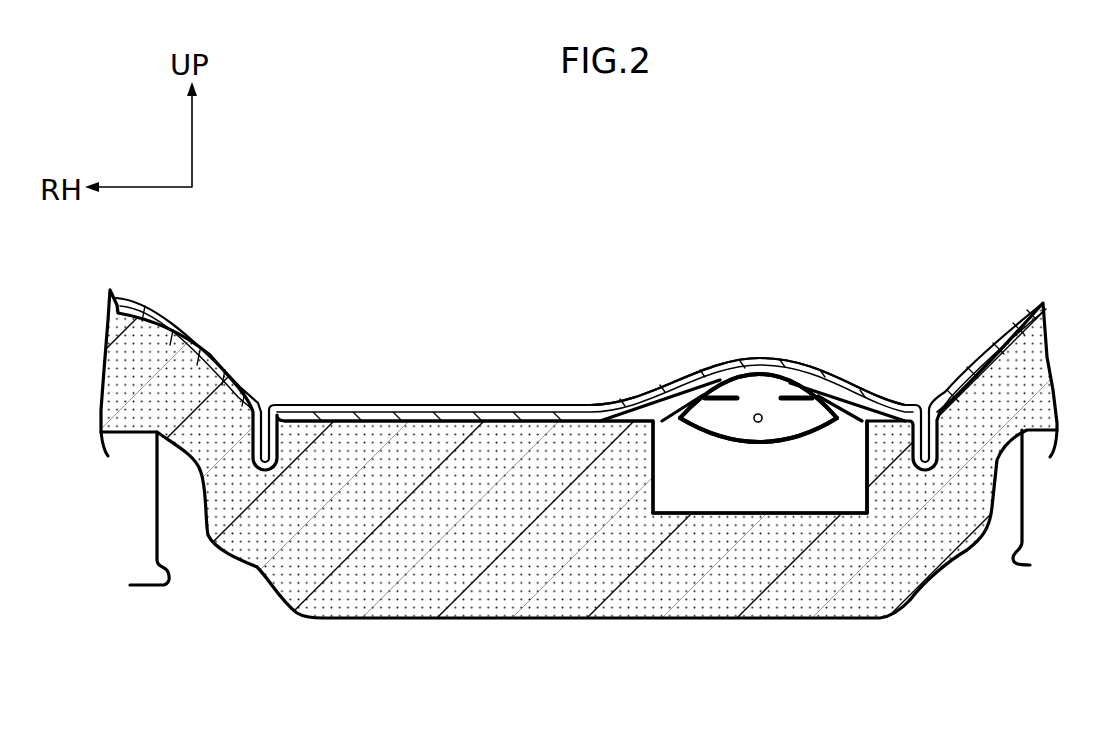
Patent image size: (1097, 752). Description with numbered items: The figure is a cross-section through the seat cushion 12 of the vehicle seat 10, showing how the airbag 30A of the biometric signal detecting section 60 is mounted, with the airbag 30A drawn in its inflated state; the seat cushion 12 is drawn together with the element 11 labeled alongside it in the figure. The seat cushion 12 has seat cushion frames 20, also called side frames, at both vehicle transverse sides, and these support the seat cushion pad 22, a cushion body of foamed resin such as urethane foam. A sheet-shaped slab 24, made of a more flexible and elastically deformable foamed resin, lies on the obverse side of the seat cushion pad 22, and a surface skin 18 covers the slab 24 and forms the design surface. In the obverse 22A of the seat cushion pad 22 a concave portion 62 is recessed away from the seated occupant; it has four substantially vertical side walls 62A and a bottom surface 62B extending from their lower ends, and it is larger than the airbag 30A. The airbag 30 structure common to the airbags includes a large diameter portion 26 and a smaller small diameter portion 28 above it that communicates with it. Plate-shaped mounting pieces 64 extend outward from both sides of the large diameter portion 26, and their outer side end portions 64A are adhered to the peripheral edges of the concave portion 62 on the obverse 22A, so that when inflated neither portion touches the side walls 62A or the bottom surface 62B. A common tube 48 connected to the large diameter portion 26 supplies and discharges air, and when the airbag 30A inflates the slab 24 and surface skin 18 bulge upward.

The vehicle seat 10 is at (302, 325).
The skin member 11 is at (579, 379).
The seat cushion 12 is at (374, 384).
The surface skin 18 is at (492, 403).
The seat cushion frames 20 is at (157, 546).
The seat cushion pad 22 is at (506, 586).
The obverse 22A is at (610, 407).
The slab 24 is at (532, 417).
The large diameter portion 26 is at (750, 443).
The small diameter portion 28 is at (768, 390).
The airbag 30 is at (758, 567).
The airbag 30A is at (776, 460).
The common tube 48 is at (753, 418).
The biometric signal detecting section 60 is at (848, 363).
The concave portion 62 is at (720, 504).
The side walls 62A is at (867, 452).
The bottom surface 62B is at (811, 513).
The mounting pieces 64 is at (672, 405).
The outer side end portions 64A is at (645, 412).